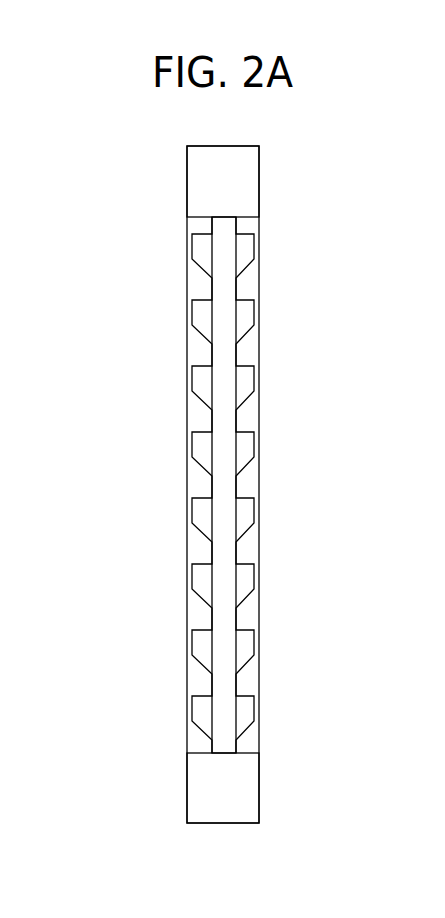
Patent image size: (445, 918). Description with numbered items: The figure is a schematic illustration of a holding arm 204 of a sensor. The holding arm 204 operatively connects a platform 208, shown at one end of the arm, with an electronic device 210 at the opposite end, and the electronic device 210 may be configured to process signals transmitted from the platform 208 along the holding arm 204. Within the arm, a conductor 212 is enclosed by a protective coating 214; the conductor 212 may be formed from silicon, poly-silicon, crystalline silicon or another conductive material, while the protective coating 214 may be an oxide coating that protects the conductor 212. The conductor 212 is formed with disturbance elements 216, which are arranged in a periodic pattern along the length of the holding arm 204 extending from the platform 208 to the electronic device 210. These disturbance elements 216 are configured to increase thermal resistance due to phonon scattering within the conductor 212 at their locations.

The holding arm 204 is at (292, 438).
The platform 208 is at (259, 797).
The electronic device 210 is at (259, 184).
The conductor 212 is at (237, 382).
The protective coating 214 is at (247, 547).
The disturbance elements 216 is at (203, 519).